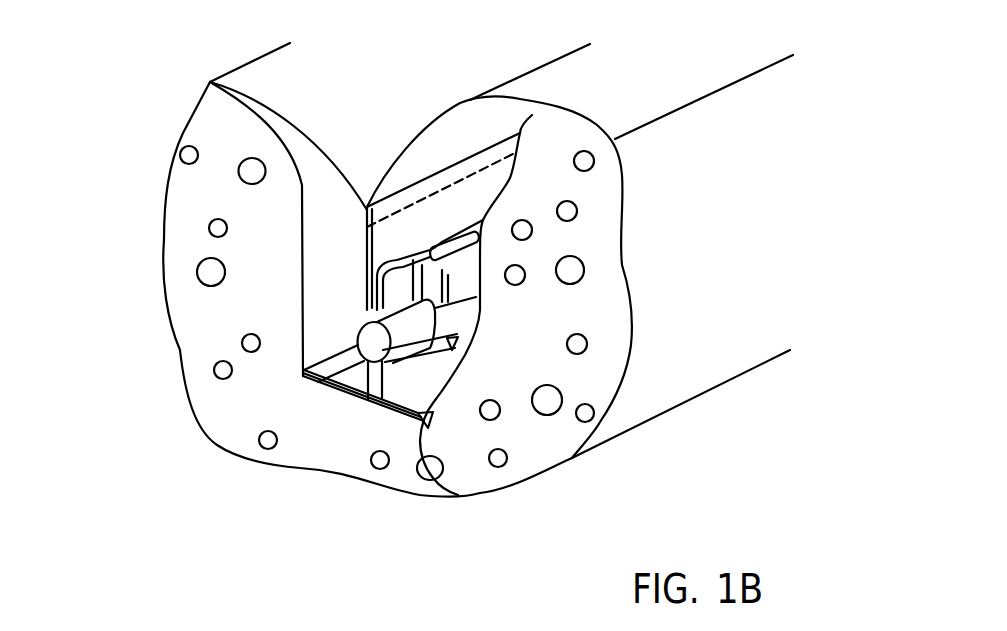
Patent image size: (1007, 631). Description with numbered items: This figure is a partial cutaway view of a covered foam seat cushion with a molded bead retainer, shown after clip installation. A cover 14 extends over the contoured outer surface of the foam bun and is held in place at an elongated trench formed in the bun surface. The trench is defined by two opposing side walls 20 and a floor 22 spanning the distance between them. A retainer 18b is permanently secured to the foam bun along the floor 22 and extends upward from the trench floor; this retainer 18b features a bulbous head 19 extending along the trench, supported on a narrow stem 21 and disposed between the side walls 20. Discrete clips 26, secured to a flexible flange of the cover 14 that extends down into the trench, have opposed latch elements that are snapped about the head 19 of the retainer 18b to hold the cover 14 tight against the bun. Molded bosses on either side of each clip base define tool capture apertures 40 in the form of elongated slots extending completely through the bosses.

The cover 14 is at (490, 96).
The side walls 20 is at (300, 210).
The bulbous head 19 is at (357, 343).
The tool capture apertures 40 is at (440, 233).
The clips 26 is at (480, 298).
The floor 22 is at (440, 470).
The narrow stem 21 is at (345, 385).
The retainer 18b is at (400, 382).